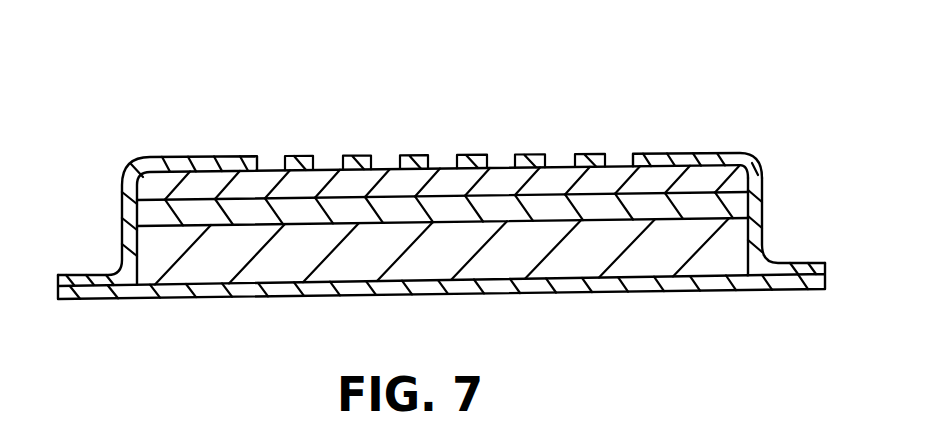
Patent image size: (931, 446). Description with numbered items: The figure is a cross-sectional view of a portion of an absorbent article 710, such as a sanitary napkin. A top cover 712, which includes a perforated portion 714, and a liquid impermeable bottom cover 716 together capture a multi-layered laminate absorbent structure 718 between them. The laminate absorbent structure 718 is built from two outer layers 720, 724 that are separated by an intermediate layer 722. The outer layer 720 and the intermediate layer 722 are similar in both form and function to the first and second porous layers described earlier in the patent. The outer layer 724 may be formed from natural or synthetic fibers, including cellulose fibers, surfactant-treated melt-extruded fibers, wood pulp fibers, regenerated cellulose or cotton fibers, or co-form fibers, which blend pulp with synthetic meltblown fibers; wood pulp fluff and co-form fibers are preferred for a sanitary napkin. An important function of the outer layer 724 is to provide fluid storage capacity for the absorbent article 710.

The absorbent article 710 is at (680, 97).
The top cover 712 is at (741, 156).
The perforated portion 714 is at (358, 157).
The liquid impermeable bottom cover 716 is at (650, 292).
The multi-layered laminate absorbent structure 718 is at (782, 218).
The outer layer 720 is at (163, 190).
The intermediate layer 722 is at (149, 212).
The outer layer 724 is at (157, 246).